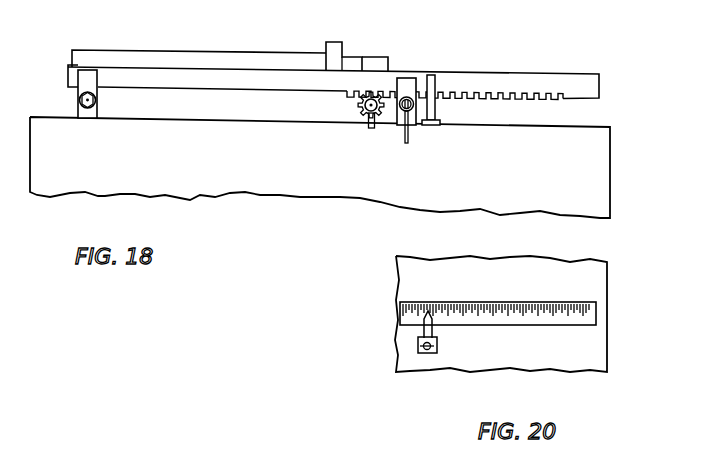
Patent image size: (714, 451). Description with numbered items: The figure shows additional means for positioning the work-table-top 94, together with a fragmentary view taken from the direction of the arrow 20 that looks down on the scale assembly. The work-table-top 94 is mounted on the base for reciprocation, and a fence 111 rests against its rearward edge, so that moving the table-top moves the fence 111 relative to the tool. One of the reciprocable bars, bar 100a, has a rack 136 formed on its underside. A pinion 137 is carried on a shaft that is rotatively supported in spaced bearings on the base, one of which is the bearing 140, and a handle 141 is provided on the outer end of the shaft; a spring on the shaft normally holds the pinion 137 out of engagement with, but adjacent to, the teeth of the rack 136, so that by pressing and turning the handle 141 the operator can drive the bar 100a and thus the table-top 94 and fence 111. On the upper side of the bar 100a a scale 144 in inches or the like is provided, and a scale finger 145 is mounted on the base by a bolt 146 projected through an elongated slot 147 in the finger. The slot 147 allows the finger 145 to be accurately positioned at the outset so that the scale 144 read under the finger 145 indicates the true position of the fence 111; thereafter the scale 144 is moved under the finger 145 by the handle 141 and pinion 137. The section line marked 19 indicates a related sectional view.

In FIG. 18, the work-table-top 94 is at (195, 52).
In FIG. 18, the section line 19 is at (322, 66).
In FIG. 18, the fence 111 is at (338, 42).
In FIG. 18, the arrow 20 is at (432, 50).
In FIG. 18, the scale finger 145 is at (437, 73).
In FIG. 20, the scale finger 145 is at (434, 332).
In FIG. 18, the bar 100a is at (333, 85).
In FIG. 20, the bar 100a is at (498, 302).
In FIG. 18, the rack 136 is at (484, 96).
In FIG. 18, the pinion 137 is at (361, 108).
In FIG. 18, the bearing 140 is at (367, 119).
In FIG. 18, the handle 141 is at (374, 121).
In FIG. 20, the scale 144 is at (500, 311).
In FIG. 20, the bolt 146 is at (428, 353).
In FIG. 20, the elongated slot 147 is at (438, 346).